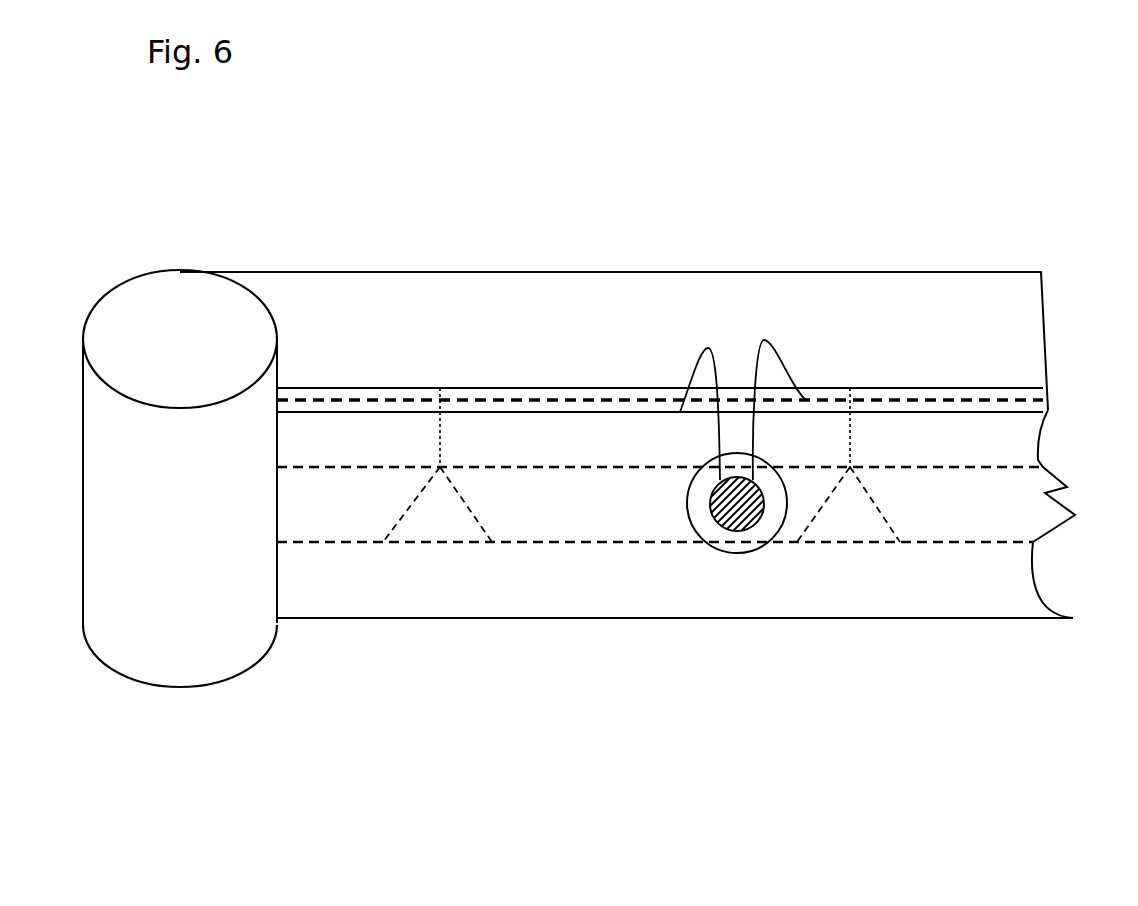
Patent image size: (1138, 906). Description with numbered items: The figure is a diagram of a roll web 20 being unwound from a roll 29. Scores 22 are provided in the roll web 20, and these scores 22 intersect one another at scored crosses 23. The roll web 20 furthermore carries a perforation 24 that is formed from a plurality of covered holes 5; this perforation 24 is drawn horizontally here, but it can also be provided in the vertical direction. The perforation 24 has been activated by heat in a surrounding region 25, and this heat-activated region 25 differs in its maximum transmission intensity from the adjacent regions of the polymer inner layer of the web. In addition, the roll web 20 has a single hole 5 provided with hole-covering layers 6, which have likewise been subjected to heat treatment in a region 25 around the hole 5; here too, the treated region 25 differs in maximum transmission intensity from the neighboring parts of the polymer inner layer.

The roll web 20 is at (180, 395).
The roll 29 is at (235, 646).
The scores 22 is at (978, 466).
The perforation 24 is at (333, 402).
The hole 5 is at (570, 400).
The scored crosses 23 is at (440, 395).
The region activated by heat 25 is at (748, 540).
The hole-covering layers 6 is at (675, 412).